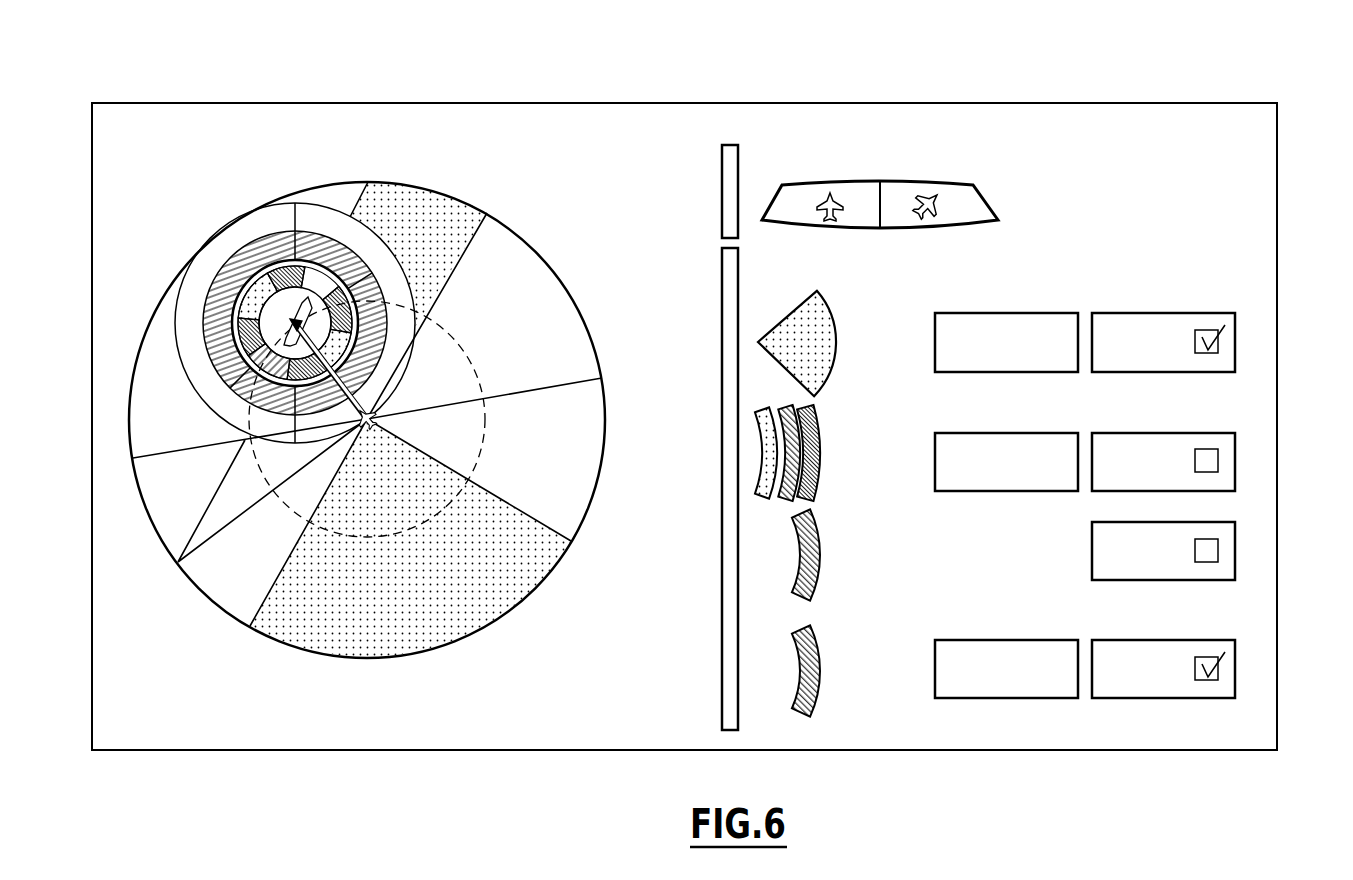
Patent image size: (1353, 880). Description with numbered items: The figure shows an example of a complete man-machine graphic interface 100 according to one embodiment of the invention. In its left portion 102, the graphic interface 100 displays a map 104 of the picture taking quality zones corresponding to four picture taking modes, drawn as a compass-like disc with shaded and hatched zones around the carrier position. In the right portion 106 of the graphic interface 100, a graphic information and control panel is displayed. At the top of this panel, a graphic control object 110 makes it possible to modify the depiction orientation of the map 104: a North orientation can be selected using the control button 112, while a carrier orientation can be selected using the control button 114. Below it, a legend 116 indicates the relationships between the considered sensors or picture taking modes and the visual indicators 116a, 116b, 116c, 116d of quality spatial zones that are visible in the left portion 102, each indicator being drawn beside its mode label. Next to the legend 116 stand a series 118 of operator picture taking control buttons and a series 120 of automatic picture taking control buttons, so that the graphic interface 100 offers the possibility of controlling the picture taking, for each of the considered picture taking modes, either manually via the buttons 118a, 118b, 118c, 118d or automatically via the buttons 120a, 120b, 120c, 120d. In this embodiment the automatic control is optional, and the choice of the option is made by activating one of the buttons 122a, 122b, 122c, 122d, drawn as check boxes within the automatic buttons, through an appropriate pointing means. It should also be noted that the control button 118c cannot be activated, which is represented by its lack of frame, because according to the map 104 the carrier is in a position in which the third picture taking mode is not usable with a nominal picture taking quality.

The graphic interface 100 is at (1284, 225).
The left portion 102 is at (160, 146).
The map 104 is at (461, 188).
The right portion 106 is at (1176, 150).
The graphic control object 110 is at (998, 218).
The control button 112 is at (858, 220).
The control button 114 is at (907, 217).
The legend 116 is at (786, 673).
The visual indicator 116a is at (795, 333).
The visual indicator 116b is at (770, 506).
The visual indicator 116c is at (790, 558).
The visual indicator 116d is at (814, 688).
The series of operator picture taking control buttons 118 is at (1022, 306).
The operator picture taking control button 118a is at (960, 374).
The operator picture taking control button 118b is at (960, 492).
The operator picture taking control button 118c is at (998, 577).
The operator picture taking control button 118d is at (1048, 698).
The series of automatic picture taking control buttons 120 is at (1144, 307).
The automatic picture taking control button 120a is at (1236, 339).
The automatic picture taking control button 120b is at (1236, 468).
The automatic picture taking control button 120c is at (1236, 558).
The automatic picture taking control button 120d is at (1236, 676).
The option button 122a is at (1208, 329).
The option button 122b is at (1208, 446).
The option button 122c is at (1208, 537).
The option button 122d is at (1208, 655).